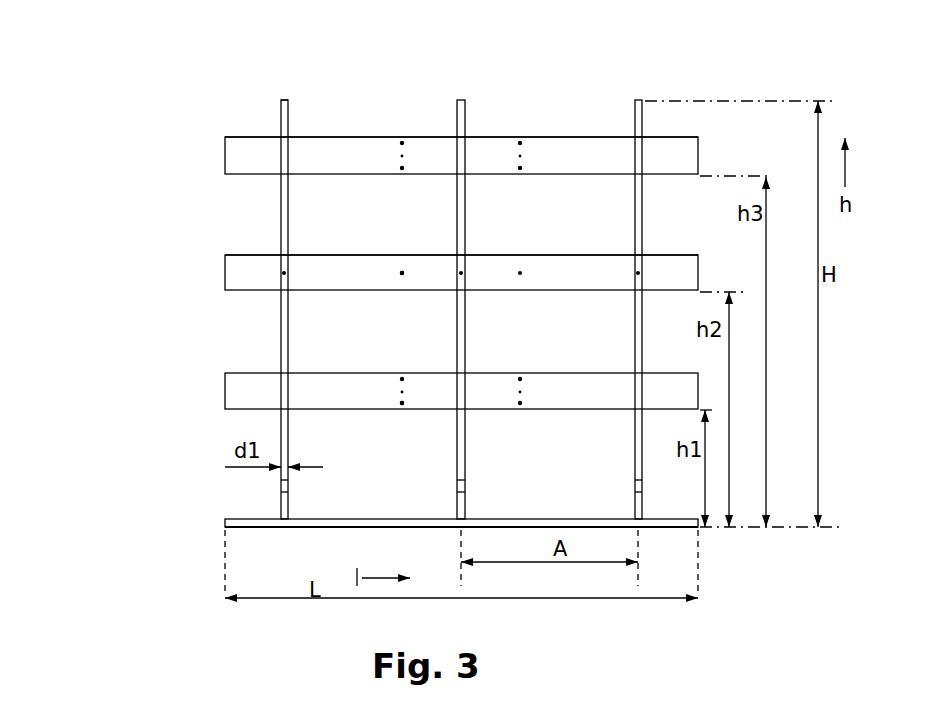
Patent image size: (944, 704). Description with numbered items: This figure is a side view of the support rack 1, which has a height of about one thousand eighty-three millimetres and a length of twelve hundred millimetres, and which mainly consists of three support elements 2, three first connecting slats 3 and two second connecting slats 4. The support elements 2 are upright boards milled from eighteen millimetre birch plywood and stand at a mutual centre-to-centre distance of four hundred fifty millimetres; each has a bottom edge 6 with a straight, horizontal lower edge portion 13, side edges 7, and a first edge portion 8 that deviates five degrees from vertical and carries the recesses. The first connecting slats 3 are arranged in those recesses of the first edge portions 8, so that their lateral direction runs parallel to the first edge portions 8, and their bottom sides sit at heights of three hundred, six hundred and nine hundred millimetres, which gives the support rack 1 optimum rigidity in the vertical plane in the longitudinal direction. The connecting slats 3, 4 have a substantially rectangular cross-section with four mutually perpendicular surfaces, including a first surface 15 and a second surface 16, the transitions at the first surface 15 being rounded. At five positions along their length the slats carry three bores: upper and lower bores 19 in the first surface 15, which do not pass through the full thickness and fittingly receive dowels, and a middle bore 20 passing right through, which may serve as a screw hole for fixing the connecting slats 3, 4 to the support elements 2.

The support rack 1 is at (117, 95).
The support element 2 is at (290, 188).
The first connecting slat 3 is at (225, 157).
The second connecting slat 4 is at (237, 520).
The bottom edge 6 is at (286, 528).
The side edge 7 is at (280, 495).
The first edge portion 8 is at (283, 117).
The lower edge portion 13 is at (280, 536).
The first surface 15 is at (242, 155).
The second surface 16 is at (247, 265).
The upper and lower bores 19 is at (402, 403).
The middle bore 20 is at (402, 273).